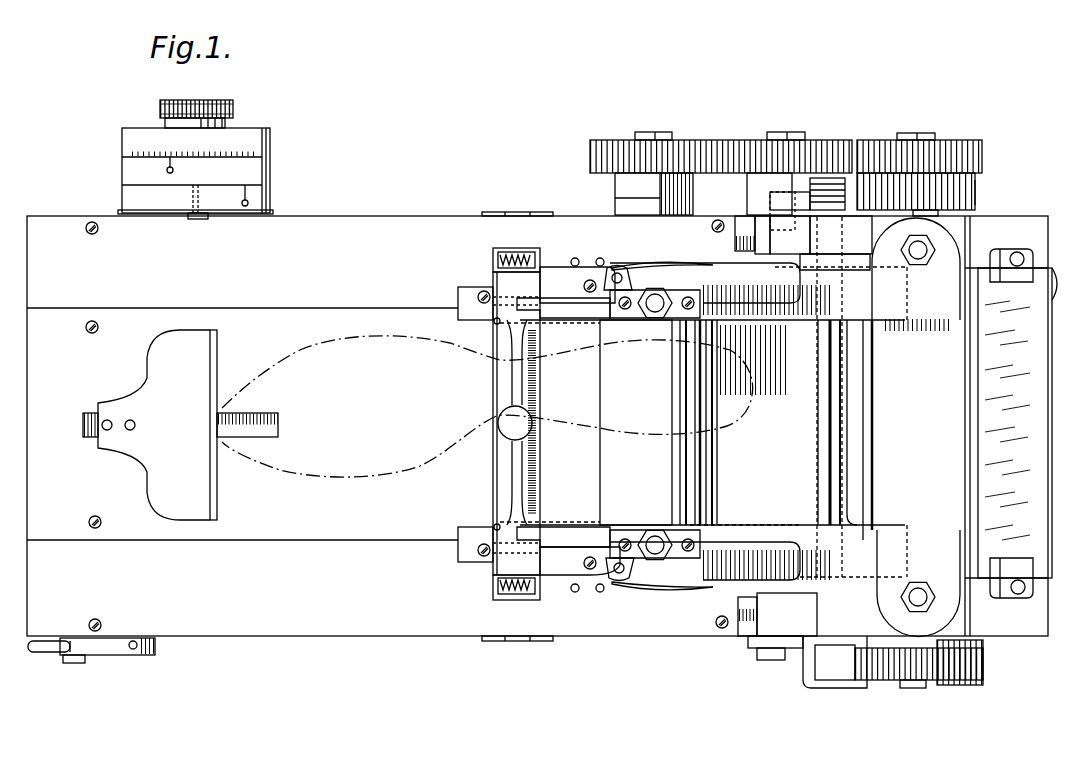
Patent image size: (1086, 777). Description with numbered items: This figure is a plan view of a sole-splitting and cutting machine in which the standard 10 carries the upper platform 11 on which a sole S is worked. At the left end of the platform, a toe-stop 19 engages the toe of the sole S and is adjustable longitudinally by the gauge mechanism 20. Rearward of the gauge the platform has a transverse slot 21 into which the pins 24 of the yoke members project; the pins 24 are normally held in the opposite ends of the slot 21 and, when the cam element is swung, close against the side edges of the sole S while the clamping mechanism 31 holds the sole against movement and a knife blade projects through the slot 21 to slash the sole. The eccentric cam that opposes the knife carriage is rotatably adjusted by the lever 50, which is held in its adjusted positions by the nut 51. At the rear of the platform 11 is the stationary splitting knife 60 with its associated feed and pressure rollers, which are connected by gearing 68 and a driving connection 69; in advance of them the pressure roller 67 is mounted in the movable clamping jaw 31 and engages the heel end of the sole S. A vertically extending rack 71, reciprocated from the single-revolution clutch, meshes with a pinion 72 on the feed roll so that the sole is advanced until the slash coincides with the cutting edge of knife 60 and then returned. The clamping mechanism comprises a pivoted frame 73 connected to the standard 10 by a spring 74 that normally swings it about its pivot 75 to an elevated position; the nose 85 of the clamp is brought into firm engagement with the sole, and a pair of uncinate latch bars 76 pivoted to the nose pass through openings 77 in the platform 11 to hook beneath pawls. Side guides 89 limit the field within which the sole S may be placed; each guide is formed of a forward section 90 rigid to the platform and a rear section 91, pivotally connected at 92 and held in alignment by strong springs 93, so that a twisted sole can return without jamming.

The standard 10 is at (847, 426).
The upper platform 11 is at (537, 426).
The toe-stop 19 is at (217, 370).
The gauge mechanism 20 is at (272, 170).
The transverse slot 21 is at (500, 440).
The pins 24 is at (495, 322).
The clamping mechanism 31 is at (562, 527).
The lever 50 is at (105, 642).
The nut 51 is at (72, 662).
The stationary splitting knife 60 is at (1035, 386).
The pressure roller 67 is at (695, 422).
The gearing 68 is at (748, 140).
The driving connection 69 is at (967, 196).
The rack 71 is at (840, 665).
The pinion 72 is at (948, 688).
The pivoted frame 73 is at (733, 270).
The spring 74 is at (862, 140).
The pivot 75 is at (830, 489).
The uncinate latch bars 76 is at (505, 247).
The openings 77 is at (493, 255).
The nose 85 is at (508, 470).
The side guides 89 is at (469, 285).
The forward sections 90 is at (553, 270).
The rear sections 91 is at (720, 421).
The pivotal connection 92 is at (616, 272).
The strong springs 93 is at (644, 262).
The sole S is at (340, 478).